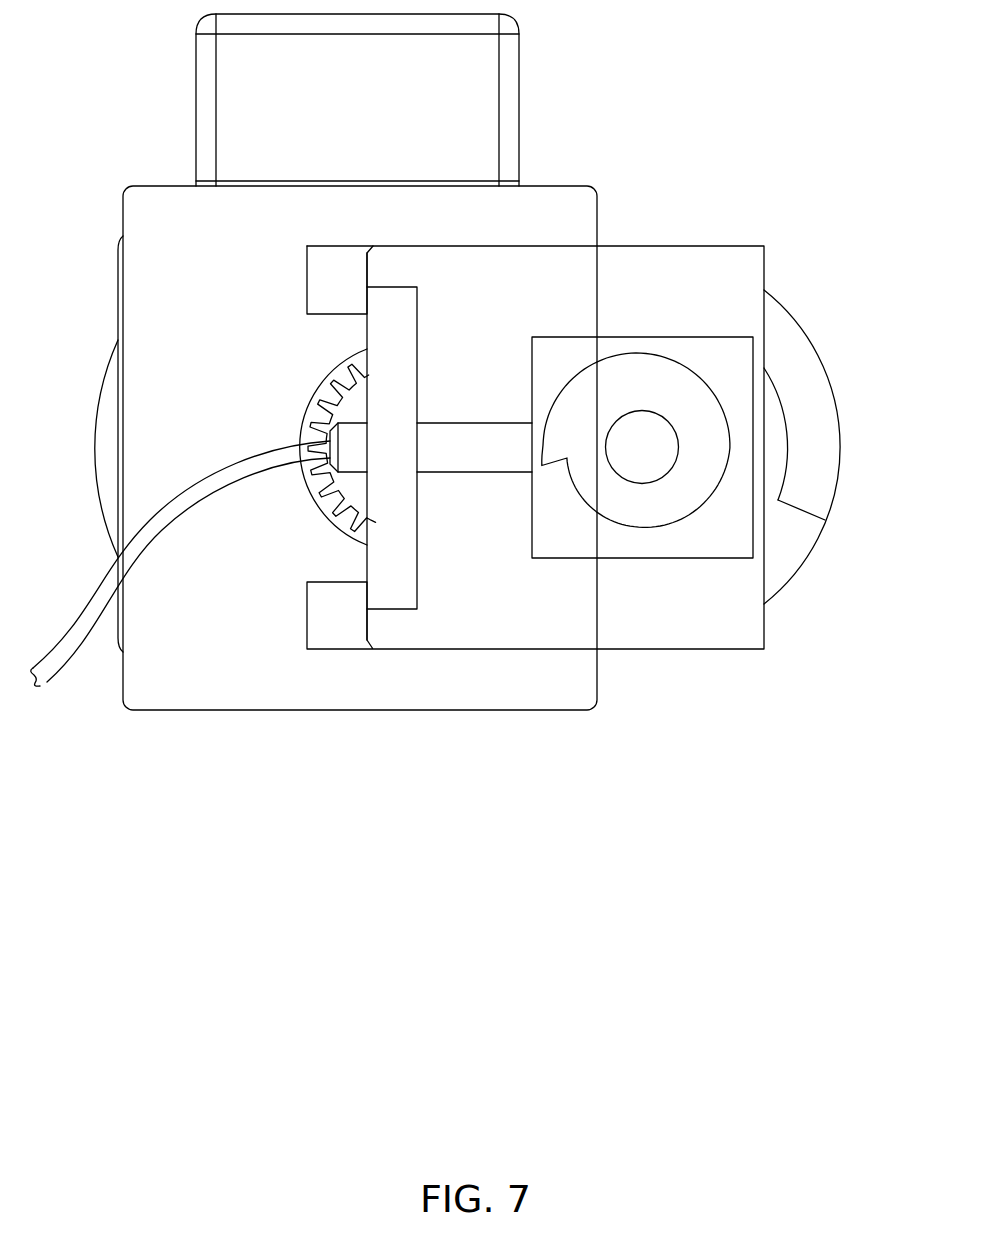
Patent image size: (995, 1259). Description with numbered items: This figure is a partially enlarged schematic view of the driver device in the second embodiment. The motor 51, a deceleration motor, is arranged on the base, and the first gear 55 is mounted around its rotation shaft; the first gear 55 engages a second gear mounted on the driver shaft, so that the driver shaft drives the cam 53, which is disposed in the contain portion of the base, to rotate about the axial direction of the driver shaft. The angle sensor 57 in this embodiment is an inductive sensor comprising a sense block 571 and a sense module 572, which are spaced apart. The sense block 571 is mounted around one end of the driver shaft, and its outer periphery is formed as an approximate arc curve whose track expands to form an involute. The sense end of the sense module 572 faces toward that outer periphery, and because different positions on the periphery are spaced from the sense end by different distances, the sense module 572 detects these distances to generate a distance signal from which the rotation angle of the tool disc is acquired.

The motor 51 is at (105, 437).
The cam 53 is at (820, 440).
The first gear 55 is at (345, 403).
The angle sensor 57 is at (696, 527).
The sense block 571 is at (697, 490).
The sense module 572 is at (443, 455).